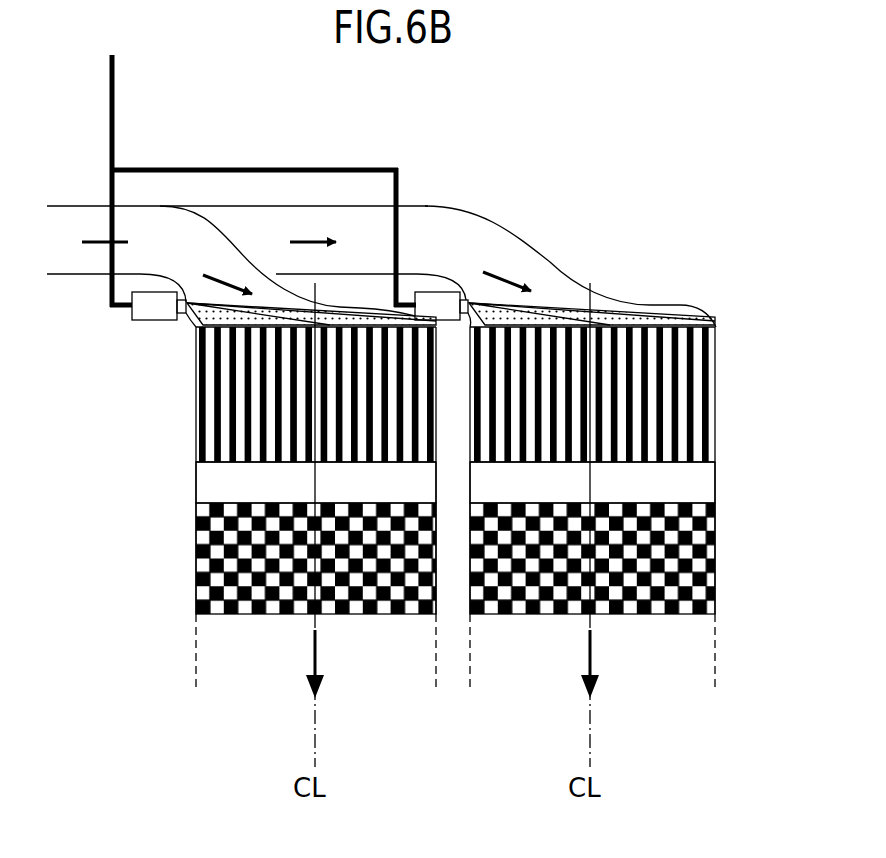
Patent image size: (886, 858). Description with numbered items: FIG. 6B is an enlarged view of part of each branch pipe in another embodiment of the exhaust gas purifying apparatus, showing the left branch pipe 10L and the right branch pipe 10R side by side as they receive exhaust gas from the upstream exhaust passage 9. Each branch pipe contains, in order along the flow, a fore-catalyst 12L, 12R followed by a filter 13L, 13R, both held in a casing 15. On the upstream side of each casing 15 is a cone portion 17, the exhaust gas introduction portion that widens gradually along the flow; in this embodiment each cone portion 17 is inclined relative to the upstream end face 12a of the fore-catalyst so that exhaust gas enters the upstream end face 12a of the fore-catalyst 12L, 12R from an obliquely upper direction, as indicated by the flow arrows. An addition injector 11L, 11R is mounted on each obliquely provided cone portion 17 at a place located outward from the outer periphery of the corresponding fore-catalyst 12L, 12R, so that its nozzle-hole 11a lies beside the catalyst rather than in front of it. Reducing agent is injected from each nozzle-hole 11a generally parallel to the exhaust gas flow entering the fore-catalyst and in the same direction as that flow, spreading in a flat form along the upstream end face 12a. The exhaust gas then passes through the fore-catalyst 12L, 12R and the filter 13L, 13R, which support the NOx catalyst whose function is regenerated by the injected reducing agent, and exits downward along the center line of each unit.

The air intake opening 9 is at (60, 206).
The branch pipe 10L is at (230, 240).
The branch pipe 10R is at (420, 205).
The addition injector 11L is at (147, 321).
The addition injector 11R is at (437, 292).
The nozzle-hole 11a is at (183, 323).
The fore-catalyst 12L is at (210, 423).
The fore-catalyst 12R is at (693, 408).
The upstream end face 12a is at (340, 322).
The filter 13L is at (203, 566).
The filter 13R is at (716, 541).
The casing 15 is at (196, 488).
The cone portion 17 is at (300, 303).